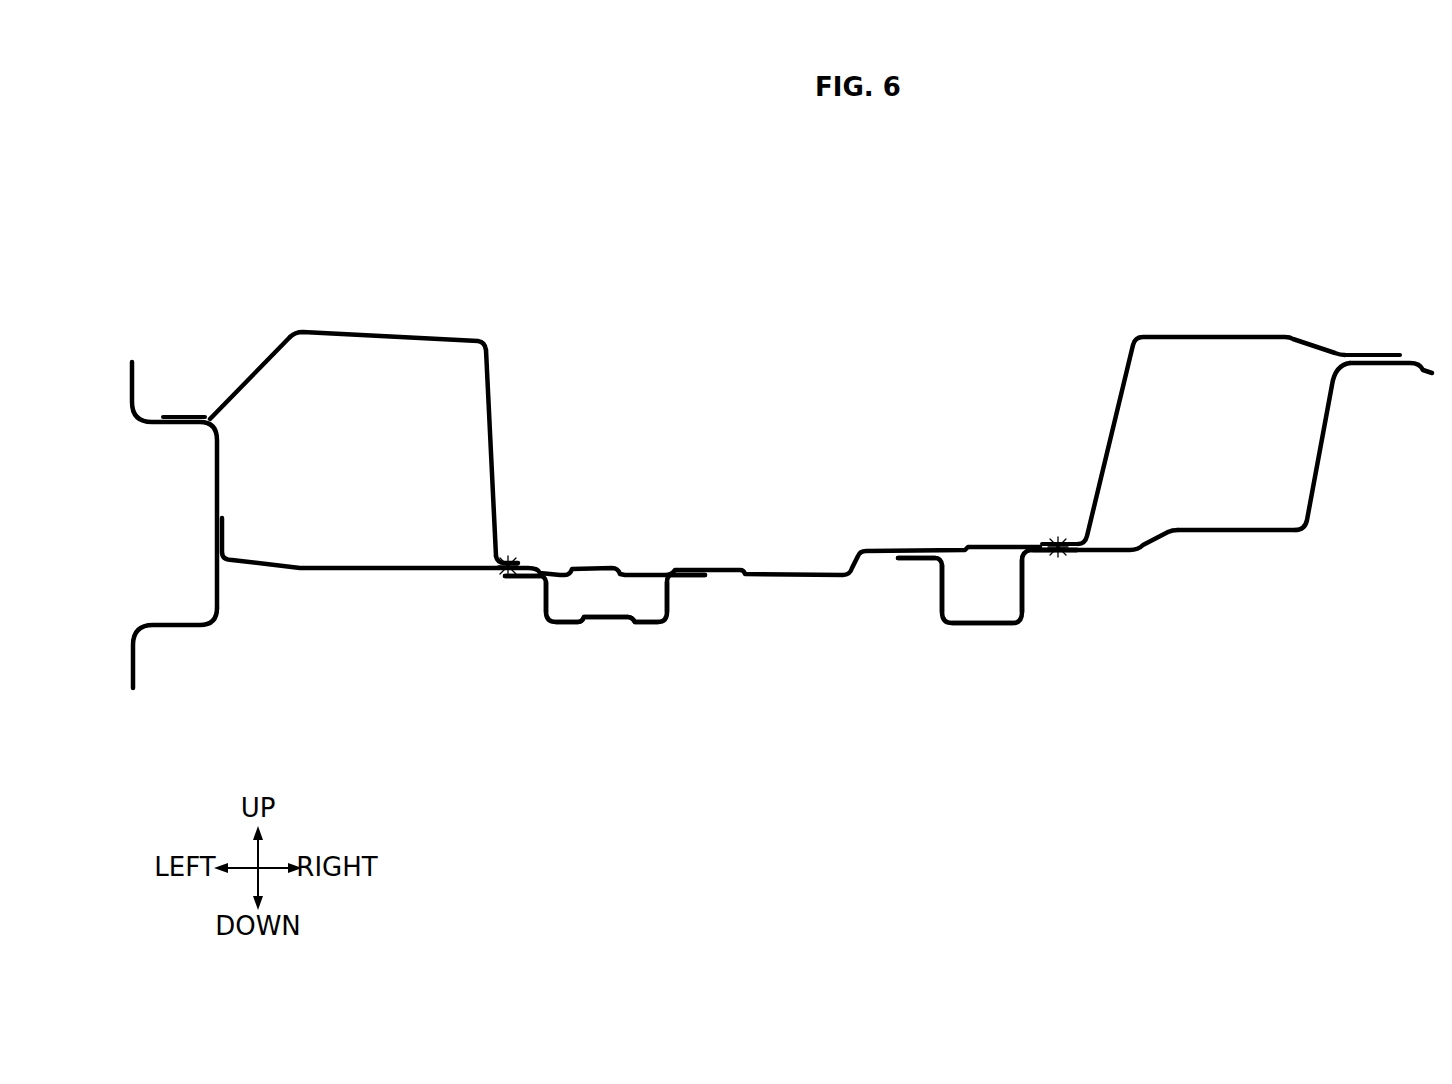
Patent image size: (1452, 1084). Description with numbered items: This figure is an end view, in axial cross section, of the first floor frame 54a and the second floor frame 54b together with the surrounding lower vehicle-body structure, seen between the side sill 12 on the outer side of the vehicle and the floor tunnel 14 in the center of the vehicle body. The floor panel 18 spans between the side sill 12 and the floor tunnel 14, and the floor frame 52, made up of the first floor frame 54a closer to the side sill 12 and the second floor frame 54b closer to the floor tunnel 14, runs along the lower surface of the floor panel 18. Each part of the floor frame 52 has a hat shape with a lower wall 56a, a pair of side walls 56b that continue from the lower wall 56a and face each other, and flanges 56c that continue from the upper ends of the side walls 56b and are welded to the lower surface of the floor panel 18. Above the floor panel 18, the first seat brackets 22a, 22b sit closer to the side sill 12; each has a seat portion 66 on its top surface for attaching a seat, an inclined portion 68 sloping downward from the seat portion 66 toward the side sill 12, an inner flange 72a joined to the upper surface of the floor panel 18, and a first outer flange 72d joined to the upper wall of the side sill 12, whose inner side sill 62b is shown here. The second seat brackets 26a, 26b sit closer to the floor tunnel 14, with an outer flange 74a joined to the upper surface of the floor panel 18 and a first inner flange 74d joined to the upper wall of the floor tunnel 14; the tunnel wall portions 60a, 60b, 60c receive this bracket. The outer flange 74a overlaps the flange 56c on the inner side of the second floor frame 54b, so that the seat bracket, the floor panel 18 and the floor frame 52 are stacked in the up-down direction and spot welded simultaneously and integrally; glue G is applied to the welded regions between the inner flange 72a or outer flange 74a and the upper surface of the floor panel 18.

The side sill 12 is at (158, 388).
The floor tunnel 14 is at (1237, 448).
The floor panel 18 is at (777, 578).
The first seat bracket 22a is at (380, 404).
The first seat bracket 22b is at (380, 404).
The second seat bracket 26a is at (1196, 385).
The second seat bracket 26b is at (1196, 385).
The floor frame 52 is at (778, 697).
The first floor frame 54a is at (628, 630).
The second floor frame 54b is at (973, 630).
The lower wall 56a is at (594, 620).
The side wall 56b is at (542, 600).
The flange 56c is at (510, 580).
The upper flange of rear member 60a is at (1397, 388).
The inclined wall of rear member 60b is at (1325, 452).
The bottom wall of rear member 60c is at (1223, 534).
The inner side sill 62b is at (192, 630).
The seat portion 66 is at (355, 330).
The inclined portion 68 is at (258, 368).
The inner flange 72a is at (512, 558).
The first outer flange 72d is at (185, 417).
The outer flange 74a is at (1057, 545).
The first inner flange 74d is at (1370, 353).
The glue G is at (518, 558).